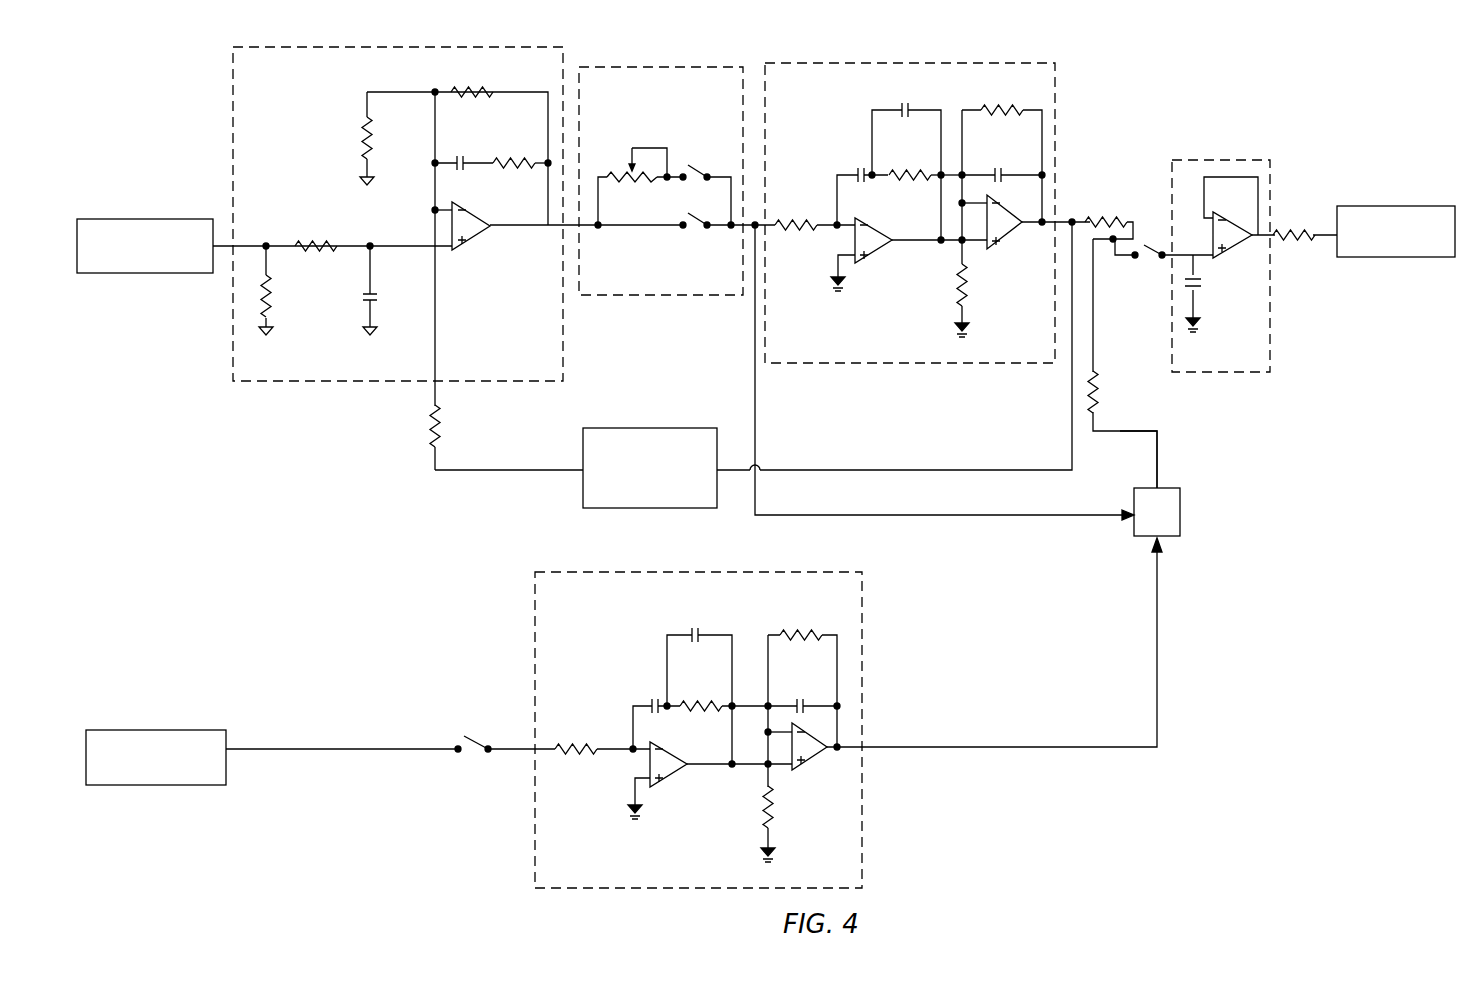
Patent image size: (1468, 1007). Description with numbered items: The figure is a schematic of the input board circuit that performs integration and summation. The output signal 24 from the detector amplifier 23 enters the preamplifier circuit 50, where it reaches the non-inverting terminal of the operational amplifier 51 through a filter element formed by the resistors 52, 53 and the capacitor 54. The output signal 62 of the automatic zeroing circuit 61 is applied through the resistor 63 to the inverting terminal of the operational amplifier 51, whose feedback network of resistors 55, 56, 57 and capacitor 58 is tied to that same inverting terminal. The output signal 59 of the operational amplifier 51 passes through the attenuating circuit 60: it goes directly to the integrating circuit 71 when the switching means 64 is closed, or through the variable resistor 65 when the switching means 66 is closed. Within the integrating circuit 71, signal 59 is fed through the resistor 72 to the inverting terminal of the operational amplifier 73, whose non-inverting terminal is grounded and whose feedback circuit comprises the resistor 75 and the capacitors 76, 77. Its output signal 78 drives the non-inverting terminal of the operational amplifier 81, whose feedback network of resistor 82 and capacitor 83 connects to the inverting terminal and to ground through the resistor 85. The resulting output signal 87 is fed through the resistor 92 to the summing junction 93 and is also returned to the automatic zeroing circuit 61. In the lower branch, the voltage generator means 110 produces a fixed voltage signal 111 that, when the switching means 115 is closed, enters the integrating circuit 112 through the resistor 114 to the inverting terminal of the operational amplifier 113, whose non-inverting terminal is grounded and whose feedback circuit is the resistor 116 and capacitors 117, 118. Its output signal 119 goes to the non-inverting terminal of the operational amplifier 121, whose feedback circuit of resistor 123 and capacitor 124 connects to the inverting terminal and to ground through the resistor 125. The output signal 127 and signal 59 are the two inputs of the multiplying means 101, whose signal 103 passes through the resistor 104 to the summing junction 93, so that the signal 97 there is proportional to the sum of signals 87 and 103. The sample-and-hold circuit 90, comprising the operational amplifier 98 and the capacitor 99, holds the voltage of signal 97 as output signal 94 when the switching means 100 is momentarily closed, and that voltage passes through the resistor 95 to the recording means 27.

The detector amplifier 23 is at (170, 218).
The output signal 24 is at (265, 243).
The recording means 27 is at (1384, 205).
The preamplifier circuit 50 is at (233, 104).
The operational amplifier 51 is at (470, 252).
The resistor 52 is at (269, 300).
The resistor 53 is at (317, 241).
The capacitor 54 is at (373, 300).
The resistor 55 is at (365, 147).
The resistor 56 is at (468, 86).
The resistor 57 is at (516, 158).
The capacitor 58 is at (458, 158).
The output signal 59 is at (521, 228).
The attenuating circuit 60 is at (661, 66).
The automatic zeroing circuit 61 is at (658, 427).
The output signal 62 is at (470, 473).
The resistor 63 is at (432, 430).
The switching means 64 is at (702, 229).
The variable resistor 65 is at (624, 172).
The switching means 66 is at (697, 170).
The integrating circuit 71 is at (934, 62).
The resistor 72 is at (798, 220).
The operational amplifier 73 is at (872, 262).
The resistor 75 is at (912, 184).
The capacitor 76 is at (896, 108).
The capacitor 77 is at (854, 170).
The output signal 78 is at (920, 244).
The operational amplifier 81 is at (999, 243).
The resistor 82 is at (990, 108).
The capacitor 83 is at (996, 172).
The resistor 85 is at (958, 300).
The output signal 87 is at (1072, 218).
The sample-and-hold circuit 90 is at (1257, 156).
The resistor 92 is at (1111, 218).
The summing junction 93 is at (1120, 240).
The output signal 94 is at (1251, 226).
The resistor 95 is at (1293, 230).
The signal 97 is at (1118, 258).
The operational amplifier 98 is at (1225, 257).
The capacitor 99 is at (1200, 290).
The switching means 100 is at (1148, 258).
The multiplying means 101 is at (1181, 516).
The signal 103 is at (1170, 431).
The resistor 104 is at (1097, 380).
The voltage generator means 110 is at (173, 729).
The signal 111 is at (320, 747).
The integrating circuit 112 is at (535, 622).
The operational amplifier 113 is at (668, 784).
The resistor 114 is at (582, 745).
The switching means 115 is at (478, 745).
The resistor 116 is at (708, 702).
The capacitor 117 is at (690, 632).
The capacitor 118 is at (652, 702).
The output signal 119 is at (710, 762).
The operational amplifier 121 is at (809, 766).
The resistor 123 is at (798, 632).
The capacitor 124 is at (804, 702).
The resistor 125 is at (765, 822).
The output signal 127 is at (1005, 749).